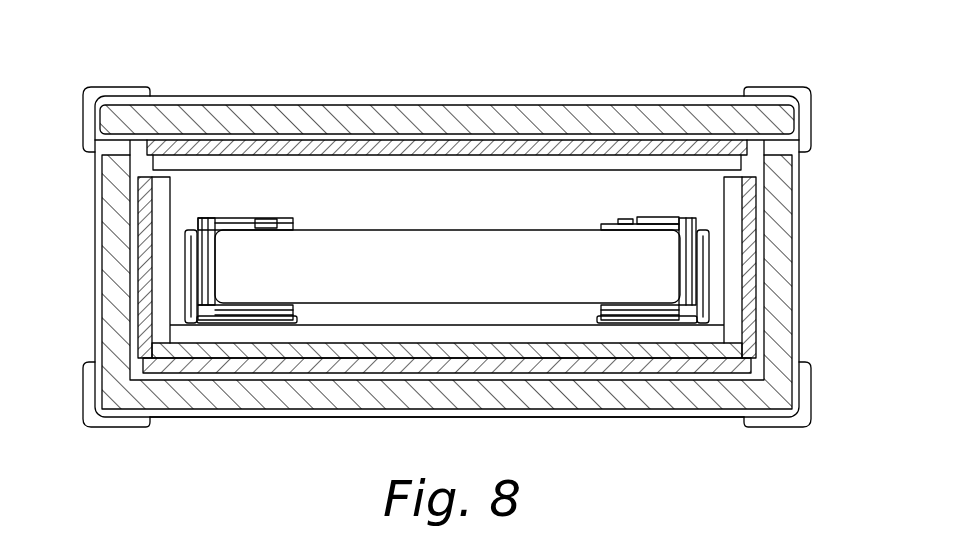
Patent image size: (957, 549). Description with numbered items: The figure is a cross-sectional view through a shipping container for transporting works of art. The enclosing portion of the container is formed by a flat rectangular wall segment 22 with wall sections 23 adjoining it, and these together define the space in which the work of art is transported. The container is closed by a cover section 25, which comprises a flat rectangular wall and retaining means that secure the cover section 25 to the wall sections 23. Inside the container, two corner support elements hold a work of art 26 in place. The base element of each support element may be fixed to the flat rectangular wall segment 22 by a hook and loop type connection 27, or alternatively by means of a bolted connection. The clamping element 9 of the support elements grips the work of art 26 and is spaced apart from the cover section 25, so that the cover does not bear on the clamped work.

The clamping element 9 is at (652, 222).
The flat rectangular wall segment 22 is at (592, 417).
The wall section 23 is at (801, 268).
The cover section 25 is at (413, 95).
The work of art 26 is at (538, 247).
The hook and loop type connection 27 is at (722, 342).